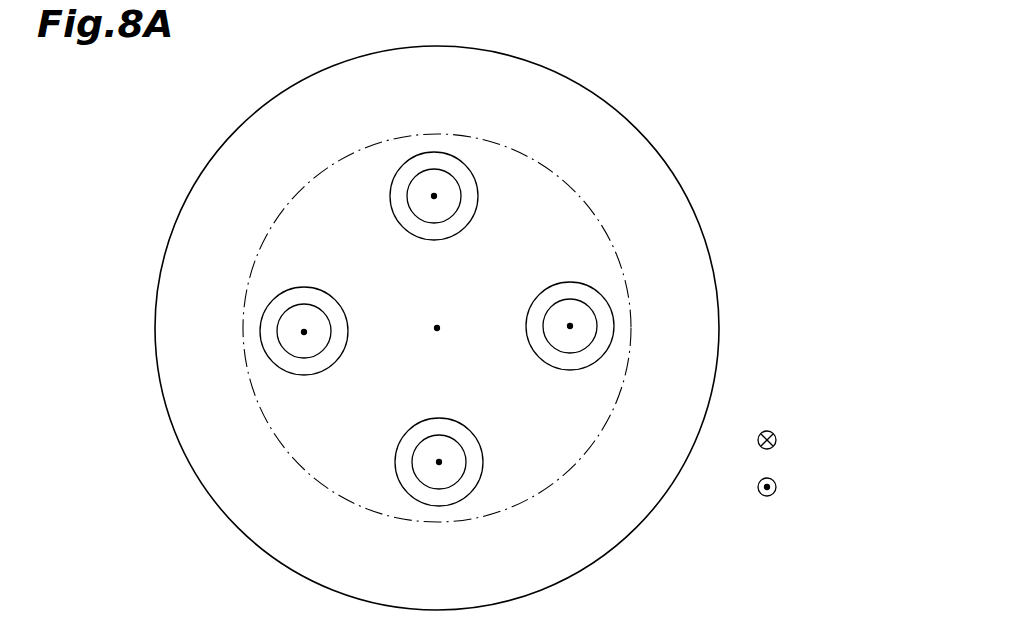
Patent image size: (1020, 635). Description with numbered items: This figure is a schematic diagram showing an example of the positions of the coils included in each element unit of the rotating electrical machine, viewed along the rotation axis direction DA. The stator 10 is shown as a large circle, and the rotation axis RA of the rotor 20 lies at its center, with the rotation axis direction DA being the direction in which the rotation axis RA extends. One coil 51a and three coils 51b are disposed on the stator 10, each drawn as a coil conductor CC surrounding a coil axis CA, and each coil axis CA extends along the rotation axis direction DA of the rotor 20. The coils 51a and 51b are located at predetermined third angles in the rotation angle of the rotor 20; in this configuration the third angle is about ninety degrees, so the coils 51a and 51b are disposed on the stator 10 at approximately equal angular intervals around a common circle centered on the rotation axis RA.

The stator 10 is at (670, 167).
The rotor 20 is at (631, 298).
The coil 51a is at (455, 158).
The coil 51b is at (260, 331).
The coil axis CA is at (304, 321).
The coil conductor CC is at (461, 208).
The rotation axis RA is at (445, 338).
The rotation axis direction DA is at (778, 443).